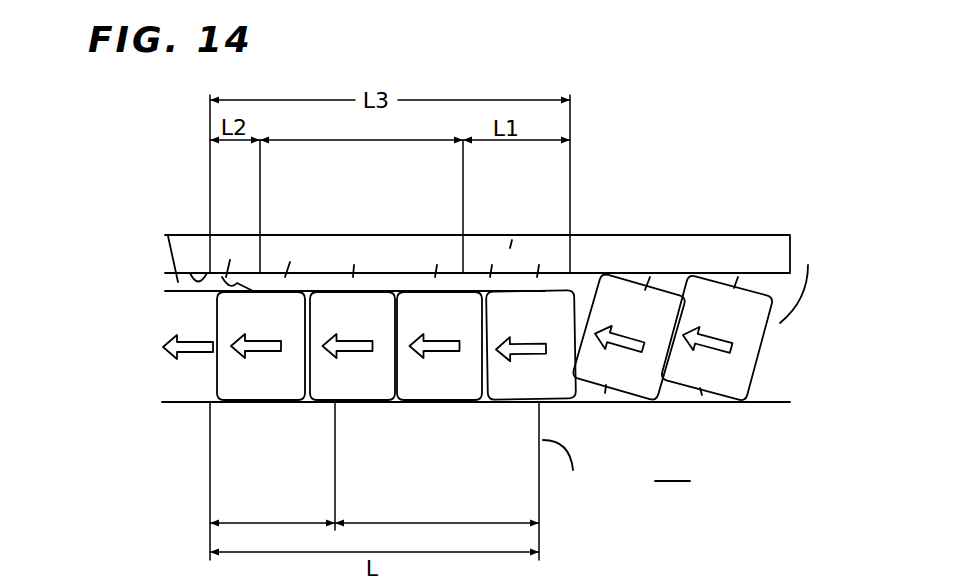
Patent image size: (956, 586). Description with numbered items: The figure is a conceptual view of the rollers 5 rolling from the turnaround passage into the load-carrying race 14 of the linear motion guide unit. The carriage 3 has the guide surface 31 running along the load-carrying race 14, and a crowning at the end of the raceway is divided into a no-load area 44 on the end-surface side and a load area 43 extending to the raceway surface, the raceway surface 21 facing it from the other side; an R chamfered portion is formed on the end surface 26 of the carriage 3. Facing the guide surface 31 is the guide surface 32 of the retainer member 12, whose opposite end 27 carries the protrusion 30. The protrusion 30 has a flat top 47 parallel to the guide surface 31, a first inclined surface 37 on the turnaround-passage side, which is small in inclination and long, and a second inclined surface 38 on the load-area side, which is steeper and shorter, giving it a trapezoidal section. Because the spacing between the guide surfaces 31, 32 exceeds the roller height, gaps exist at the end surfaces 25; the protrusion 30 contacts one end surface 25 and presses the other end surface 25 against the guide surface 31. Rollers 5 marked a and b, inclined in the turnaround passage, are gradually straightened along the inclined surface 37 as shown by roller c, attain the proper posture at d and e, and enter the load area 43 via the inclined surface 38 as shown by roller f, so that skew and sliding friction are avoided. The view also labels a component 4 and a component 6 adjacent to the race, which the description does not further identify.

The carriage 3 is at (190, 422).
The conveying path 4 is at (640, 253).
The roller 5 is at (704, 293).
The stopper 6 is at (799, 281).
The retainer member 12 is at (387, 252).
The load-carrying race 14 is at (168, 236).
The raceway surface 21 is at (492, 265).
The end surface 25 is at (290, 262).
The end surface 26 is at (569, 471).
The opposite end 27 is at (512, 240).
The protrusion 30 is at (354, 265).
The guide surface 31 is at (185, 401).
The guide surface 32 is at (195, 273).
The inclined surface 37 is at (539, 265).
The inclined surface 38 is at (230, 260).
The load area 43 is at (277, 466).
The no-load area 44 is at (437, 511).
The top 47 is at (437, 265).